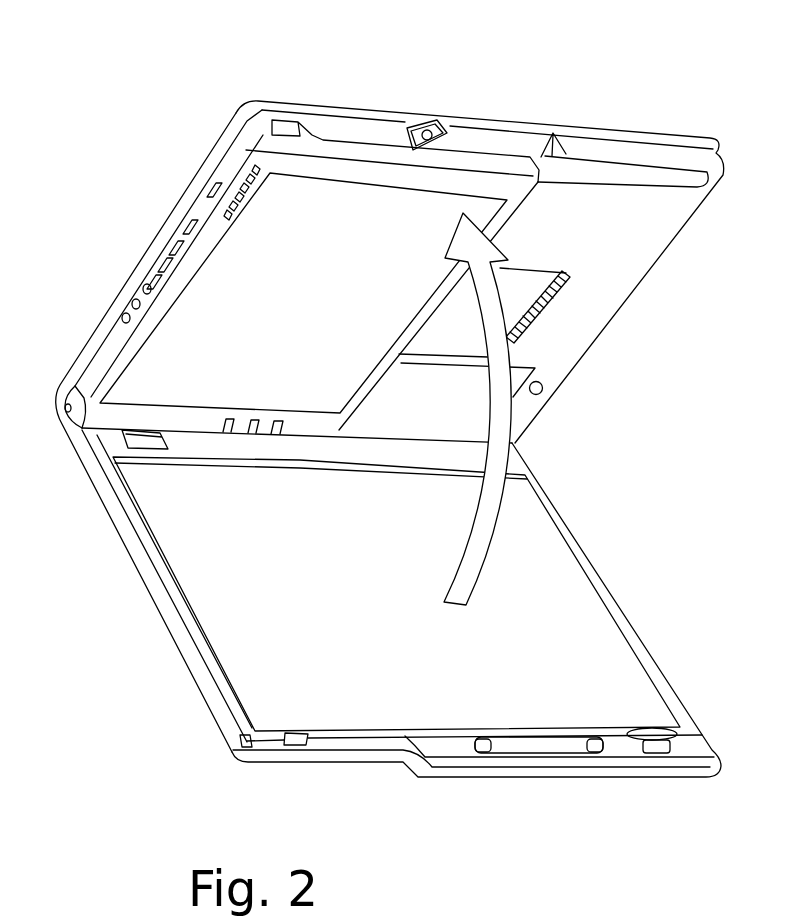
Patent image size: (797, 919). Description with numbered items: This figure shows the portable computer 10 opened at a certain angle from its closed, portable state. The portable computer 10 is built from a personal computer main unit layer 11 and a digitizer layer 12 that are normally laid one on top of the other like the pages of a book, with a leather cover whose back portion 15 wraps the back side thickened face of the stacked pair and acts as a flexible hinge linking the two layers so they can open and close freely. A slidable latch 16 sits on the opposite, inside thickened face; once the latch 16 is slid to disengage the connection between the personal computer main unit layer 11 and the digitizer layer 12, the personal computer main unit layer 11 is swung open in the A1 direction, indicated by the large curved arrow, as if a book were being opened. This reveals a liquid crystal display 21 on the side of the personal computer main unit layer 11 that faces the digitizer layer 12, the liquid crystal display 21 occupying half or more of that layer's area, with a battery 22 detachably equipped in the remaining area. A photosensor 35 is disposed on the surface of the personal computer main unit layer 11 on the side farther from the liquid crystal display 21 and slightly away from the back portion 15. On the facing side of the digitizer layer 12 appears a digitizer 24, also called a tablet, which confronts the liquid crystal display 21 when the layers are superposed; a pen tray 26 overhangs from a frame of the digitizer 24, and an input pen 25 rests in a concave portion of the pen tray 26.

The portable computer 10 is at (391, 27).
The personal computer main unit layer 11 is at (202, 205).
The digitizer layer 12 is at (177, 622).
The back portion 15 is at (63, 403).
The latch 16 is at (433, 127).
The liquid crystal display 21 is at (296, 190).
The battery 22 is at (499, 353).
The digitizer 24 is at (560, 590).
The input pen 25 is at (587, 743).
The pen tray 26 is at (453, 750).
The photosensor 35 is at (545, 385).
The A1 direction A1 is at (497, 522).